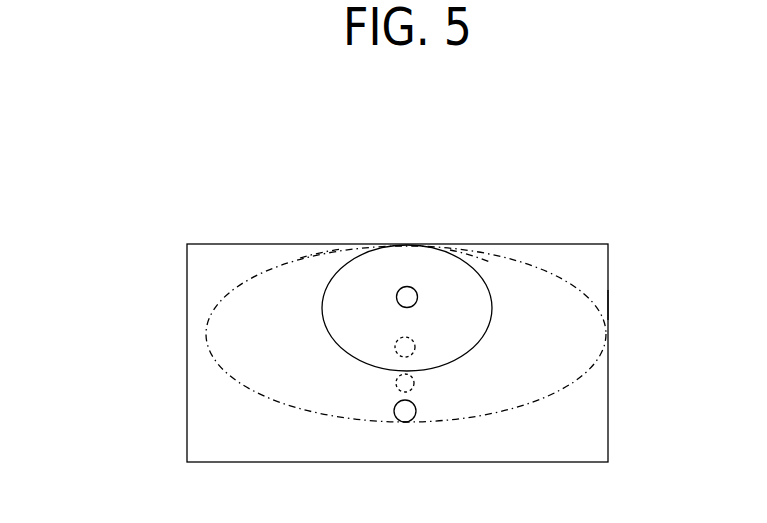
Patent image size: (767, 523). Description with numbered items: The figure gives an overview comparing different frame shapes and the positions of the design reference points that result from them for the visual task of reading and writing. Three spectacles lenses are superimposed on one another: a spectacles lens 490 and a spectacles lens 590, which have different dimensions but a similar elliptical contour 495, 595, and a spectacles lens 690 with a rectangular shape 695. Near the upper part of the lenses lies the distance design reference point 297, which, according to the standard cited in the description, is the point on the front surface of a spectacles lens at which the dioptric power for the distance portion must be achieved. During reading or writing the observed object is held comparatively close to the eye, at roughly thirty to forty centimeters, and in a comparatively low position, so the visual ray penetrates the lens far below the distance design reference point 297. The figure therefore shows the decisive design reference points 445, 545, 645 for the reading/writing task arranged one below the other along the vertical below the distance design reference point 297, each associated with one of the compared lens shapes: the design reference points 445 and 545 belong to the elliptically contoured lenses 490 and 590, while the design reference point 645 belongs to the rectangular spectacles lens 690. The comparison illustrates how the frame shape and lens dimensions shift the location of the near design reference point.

The spectacles lens 690 is at (626, 249).
The rectangular shape 695 is at (611, 305).
The spectacles lens 490 is at (533, 258).
The elliptical contour 495 is at (465, 258).
The spectacles lens 590 is at (329, 261).
The elliptical contour 595 is at (358, 247).
The distance design reference point 297 is at (386, 297).
The design reference point 545 is at (432, 345).
The design reference point 445 is at (430, 384).
The design reference point 645 is at (386, 411).